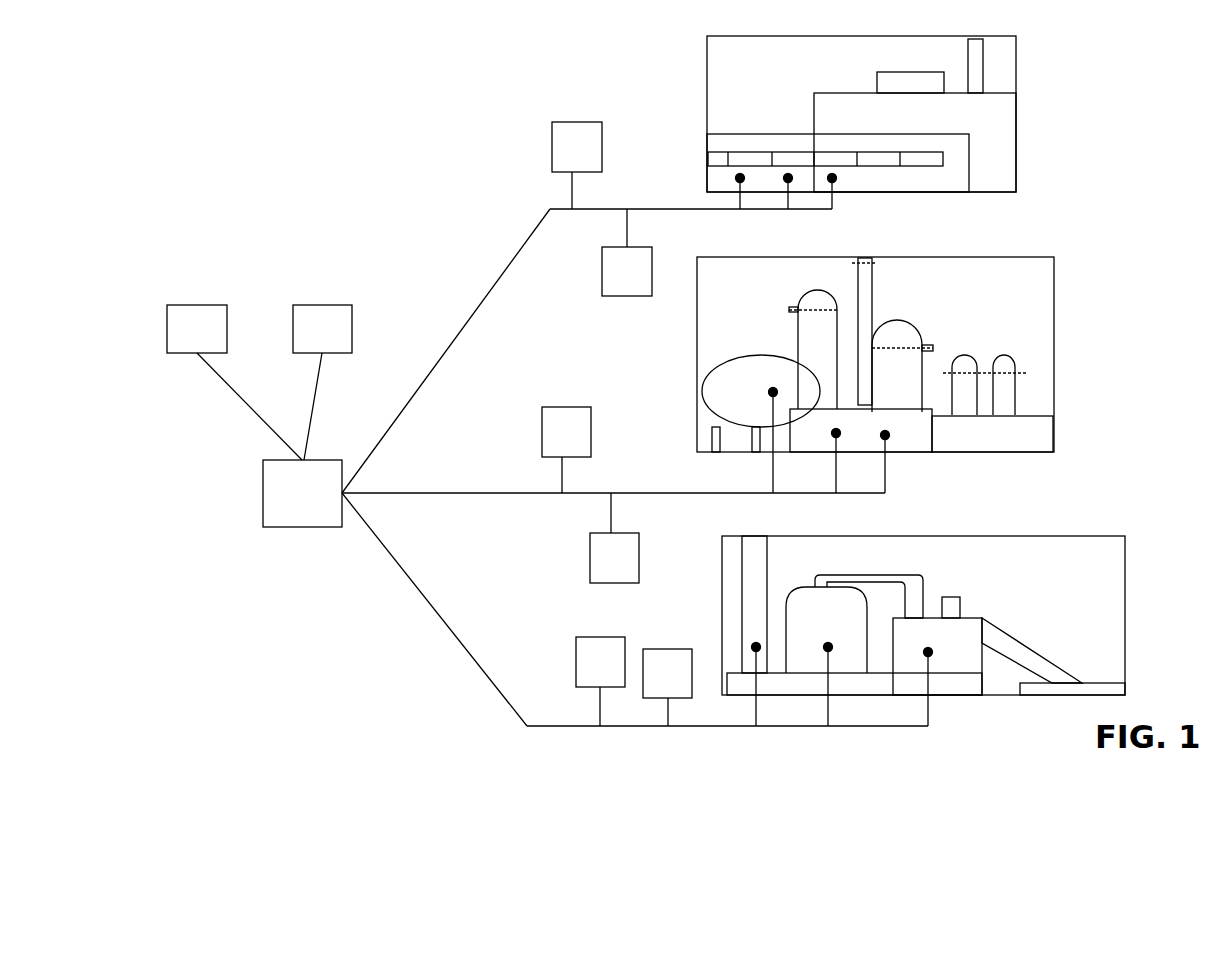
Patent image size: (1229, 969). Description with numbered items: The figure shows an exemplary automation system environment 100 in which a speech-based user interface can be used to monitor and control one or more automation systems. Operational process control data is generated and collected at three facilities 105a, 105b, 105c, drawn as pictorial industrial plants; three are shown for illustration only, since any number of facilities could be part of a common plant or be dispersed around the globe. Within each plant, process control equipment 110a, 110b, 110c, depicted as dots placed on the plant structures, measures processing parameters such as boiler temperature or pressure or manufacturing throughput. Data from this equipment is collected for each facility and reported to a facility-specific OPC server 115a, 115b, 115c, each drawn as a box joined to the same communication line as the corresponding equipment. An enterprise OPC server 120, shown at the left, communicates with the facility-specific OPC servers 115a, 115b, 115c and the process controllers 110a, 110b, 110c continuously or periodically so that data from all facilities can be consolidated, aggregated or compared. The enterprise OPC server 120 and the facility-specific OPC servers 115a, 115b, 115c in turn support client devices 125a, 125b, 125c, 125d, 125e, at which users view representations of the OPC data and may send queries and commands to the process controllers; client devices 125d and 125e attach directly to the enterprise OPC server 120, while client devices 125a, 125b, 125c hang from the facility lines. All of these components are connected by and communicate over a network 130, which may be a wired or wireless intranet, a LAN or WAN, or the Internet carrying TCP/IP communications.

The automation system environment 100 is at (352, 73).
The facility 105a is at (1016, 97).
The facility 105b is at (1055, 412).
The facility 105c is at (1073, 532).
The process control equipment 110a is at (842, 180).
The process control equipment 110b is at (900, 442).
The process control equipment 110c is at (947, 662).
The facility-specific OPC server 115a is at (577, 165).
The facility-specific OPC server 115b is at (566, 450).
The facility-specific OPC server 115c is at (600, 681).
The enterprise OPC server 120 is at (269, 440).
The client device 125a is at (627, 252).
The client device 125b is at (614, 538).
The client device 125c is at (667, 687).
The client device 125d is at (197, 329).
The client device 125e is at (322, 329).
The network 130 is at (495, 285).